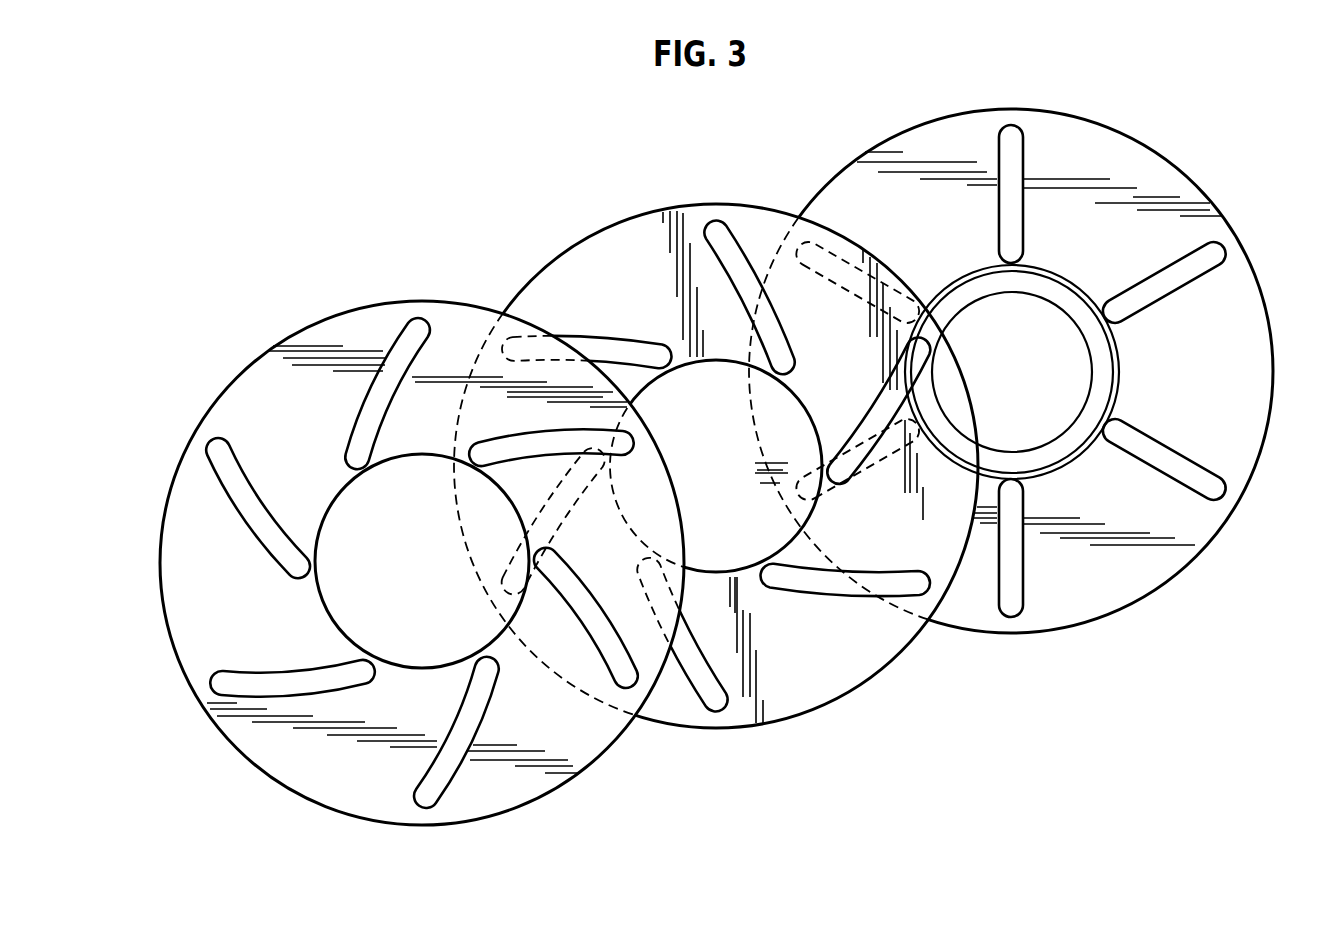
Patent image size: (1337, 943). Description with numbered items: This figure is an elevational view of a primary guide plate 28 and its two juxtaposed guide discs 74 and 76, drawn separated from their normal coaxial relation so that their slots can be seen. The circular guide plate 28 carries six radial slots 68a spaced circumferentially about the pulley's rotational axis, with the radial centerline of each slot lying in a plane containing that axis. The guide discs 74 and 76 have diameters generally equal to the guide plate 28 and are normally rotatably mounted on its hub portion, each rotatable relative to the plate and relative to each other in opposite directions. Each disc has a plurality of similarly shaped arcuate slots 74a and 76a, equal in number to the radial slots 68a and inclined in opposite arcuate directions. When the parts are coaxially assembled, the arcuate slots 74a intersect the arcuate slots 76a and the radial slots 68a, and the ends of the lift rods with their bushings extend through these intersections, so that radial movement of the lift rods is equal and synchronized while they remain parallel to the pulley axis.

The guide plate 28 is at (1153, 170).
The radial slots 68a is at (1017, 142).
The guide disc 74 is at (792, 695).
The arcuate slots 74a is at (714, 242).
The guide disc 76 is at (520, 785).
The arcuate slots 76a is at (407, 340).